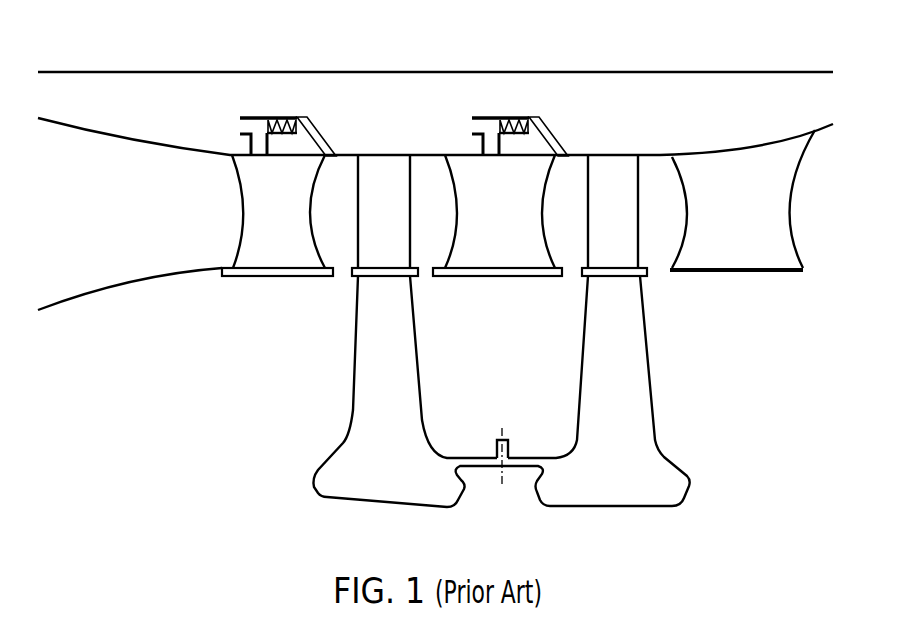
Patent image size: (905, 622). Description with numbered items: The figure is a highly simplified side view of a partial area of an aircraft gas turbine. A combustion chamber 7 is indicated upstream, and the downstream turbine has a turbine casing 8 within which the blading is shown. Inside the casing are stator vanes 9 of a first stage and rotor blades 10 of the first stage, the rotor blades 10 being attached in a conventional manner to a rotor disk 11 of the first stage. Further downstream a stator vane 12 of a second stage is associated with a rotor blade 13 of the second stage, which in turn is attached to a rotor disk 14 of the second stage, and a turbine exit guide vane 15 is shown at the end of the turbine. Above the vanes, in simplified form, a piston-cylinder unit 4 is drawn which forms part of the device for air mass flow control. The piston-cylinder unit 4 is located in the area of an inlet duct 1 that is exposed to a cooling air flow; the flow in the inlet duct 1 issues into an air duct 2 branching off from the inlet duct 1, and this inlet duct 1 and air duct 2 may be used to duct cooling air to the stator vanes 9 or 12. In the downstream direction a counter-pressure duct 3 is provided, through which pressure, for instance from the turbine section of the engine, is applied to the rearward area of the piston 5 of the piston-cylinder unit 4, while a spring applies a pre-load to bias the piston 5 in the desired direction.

The inlet duct 1 is at (245, 130).
The air duct 2 is at (250, 160).
The counter-pressure duct 3 is at (321, 130).
The piston-cylinder unit 4 is at (313, 117).
The piston 5 is at (264, 116).
The combustion chamber 7 is at (83, 272).
The turbine casing 8 is at (623, 72).
The stator vanes of a first stage 9 is at (263, 261).
The rotor blades of the first stage 10 is at (365, 258).
The rotor disk of the first stage 11 is at (363, 407).
The stator vane of a second stage 12 is at (480, 258).
The rotor blade of the second stage 13 is at (595, 258).
The rotor disk of the second stage 14 is at (603, 375).
The turbine exit guide vane 15 is at (692, 260).